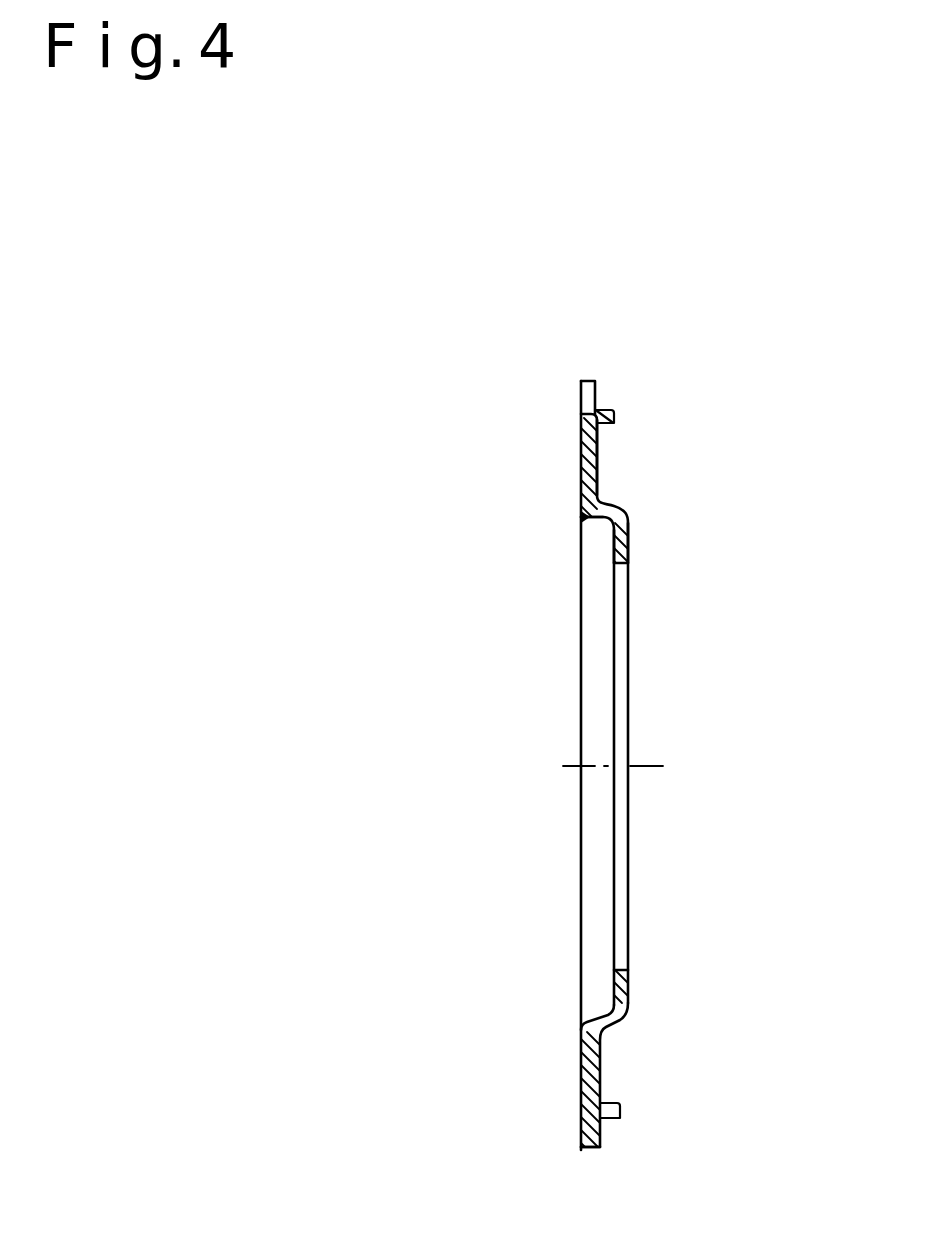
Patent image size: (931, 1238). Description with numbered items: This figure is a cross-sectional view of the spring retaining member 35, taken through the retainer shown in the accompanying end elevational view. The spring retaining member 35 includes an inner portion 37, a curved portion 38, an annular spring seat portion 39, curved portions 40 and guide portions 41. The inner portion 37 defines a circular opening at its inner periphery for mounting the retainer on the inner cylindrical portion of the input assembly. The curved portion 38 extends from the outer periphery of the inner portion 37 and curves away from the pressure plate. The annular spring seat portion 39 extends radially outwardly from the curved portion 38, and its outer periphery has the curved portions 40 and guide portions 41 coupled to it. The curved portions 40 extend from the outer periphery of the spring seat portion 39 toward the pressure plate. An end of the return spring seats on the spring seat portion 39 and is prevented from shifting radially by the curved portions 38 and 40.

The spring retaining member 35 is at (574, 867).
The inner portion 37 is at (617, 545).
The curved portion 38 is at (582, 518).
The annular spring seat portion 39 is at (580, 460).
The curved portions 40 is at (614, 420).
The guide portions 41 is at (585, 397).